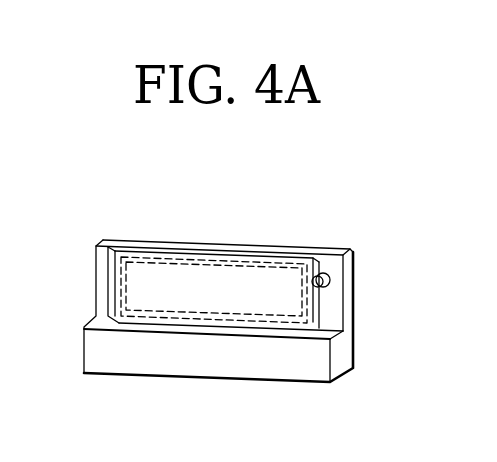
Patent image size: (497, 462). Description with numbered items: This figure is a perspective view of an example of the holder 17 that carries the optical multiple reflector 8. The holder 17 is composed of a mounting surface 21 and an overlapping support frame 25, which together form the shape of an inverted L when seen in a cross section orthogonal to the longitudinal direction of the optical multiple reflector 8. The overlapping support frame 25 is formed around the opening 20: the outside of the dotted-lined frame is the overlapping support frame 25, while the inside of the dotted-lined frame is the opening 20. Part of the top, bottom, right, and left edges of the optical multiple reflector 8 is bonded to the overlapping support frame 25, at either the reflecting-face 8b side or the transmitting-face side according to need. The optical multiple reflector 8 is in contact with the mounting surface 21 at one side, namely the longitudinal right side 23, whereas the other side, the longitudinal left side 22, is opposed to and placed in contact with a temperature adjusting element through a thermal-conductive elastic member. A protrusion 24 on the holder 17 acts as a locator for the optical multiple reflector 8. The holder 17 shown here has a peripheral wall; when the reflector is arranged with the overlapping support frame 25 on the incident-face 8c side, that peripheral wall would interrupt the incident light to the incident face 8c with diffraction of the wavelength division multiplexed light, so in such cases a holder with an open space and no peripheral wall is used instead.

The holder 17 is at (352, 290).
The mounting surface 21 is at (330, 323).
The longitudinal left side 22 is at (148, 253).
The opening 20 is at (203, 270).
The optical multiple reflector 8 is at (260, 272).
The reflecting face 8b is at (195, 305).
The incident face 8c is at (117, 271).
The longitudinal right side 23 is at (147, 331).
The protrusion 24 is at (326, 273).
The overlapping support frame 25 is at (263, 324).